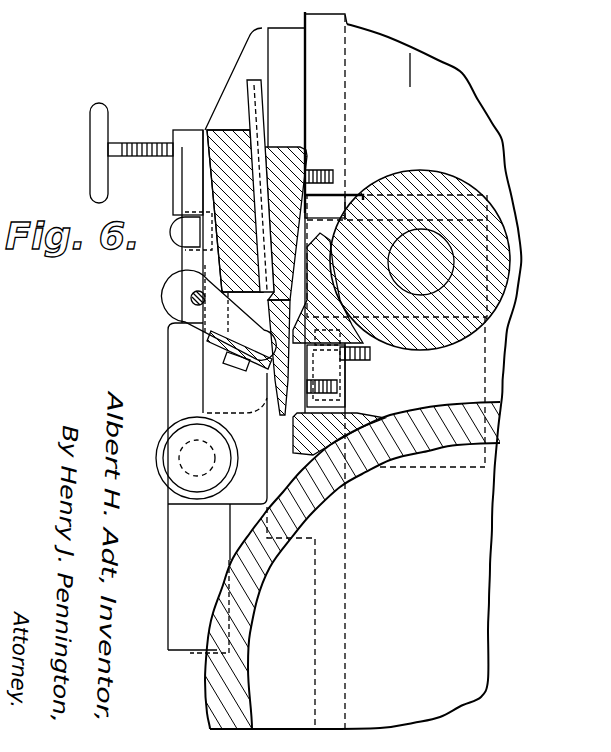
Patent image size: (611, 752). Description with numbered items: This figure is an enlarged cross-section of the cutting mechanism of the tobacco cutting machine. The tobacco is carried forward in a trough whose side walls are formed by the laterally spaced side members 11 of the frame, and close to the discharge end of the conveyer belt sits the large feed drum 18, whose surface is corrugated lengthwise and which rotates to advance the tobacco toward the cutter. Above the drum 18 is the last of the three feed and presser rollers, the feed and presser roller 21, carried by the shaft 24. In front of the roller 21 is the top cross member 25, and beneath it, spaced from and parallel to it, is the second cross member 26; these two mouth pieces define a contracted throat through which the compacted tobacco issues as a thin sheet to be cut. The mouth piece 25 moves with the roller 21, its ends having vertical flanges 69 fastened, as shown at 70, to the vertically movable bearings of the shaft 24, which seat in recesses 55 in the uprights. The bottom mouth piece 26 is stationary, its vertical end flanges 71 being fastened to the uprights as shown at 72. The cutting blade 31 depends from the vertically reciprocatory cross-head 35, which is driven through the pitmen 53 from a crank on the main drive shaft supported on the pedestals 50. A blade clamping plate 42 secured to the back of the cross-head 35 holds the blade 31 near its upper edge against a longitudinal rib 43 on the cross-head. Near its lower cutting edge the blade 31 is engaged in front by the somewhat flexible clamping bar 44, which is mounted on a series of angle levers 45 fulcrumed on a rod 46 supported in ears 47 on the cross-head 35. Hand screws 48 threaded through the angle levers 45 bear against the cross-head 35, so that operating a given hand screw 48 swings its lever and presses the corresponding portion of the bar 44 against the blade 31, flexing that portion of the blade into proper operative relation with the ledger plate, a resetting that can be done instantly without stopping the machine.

The side member 11 is at (468, 105).
The feed drum 18 is at (355, 480).
The feed and presser roller 21 is at (443, 183).
The shaft 24 is at (440, 267).
The cross member 25 is at (368, 357).
The second cross member 26 is at (380, 405).
The cutting blade 31 is at (277, 373).
The cross-head 35 is at (222, 130).
The blade clamping plate 42 is at (307, 150).
The longitudinal rib 43 is at (245, 140).
The clamping bar 44 is at (223, 345).
The angle lever 45 is at (180, 276).
The rod 46 is at (183, 328).
The ear 47 is at (172, 306).
The hand screw 48 is at (142, 143).
The pedestal 50 is at (290, 433).
The pitman 53 is at (256, 526).
The recess 55 is at (355, 197).
The vertical flange 69 is at (327, 220).
The fastening 70 is at (395, 180).
The vertical end flange 71 is at (330, 370).
The fastening 72 is at (392, 468).